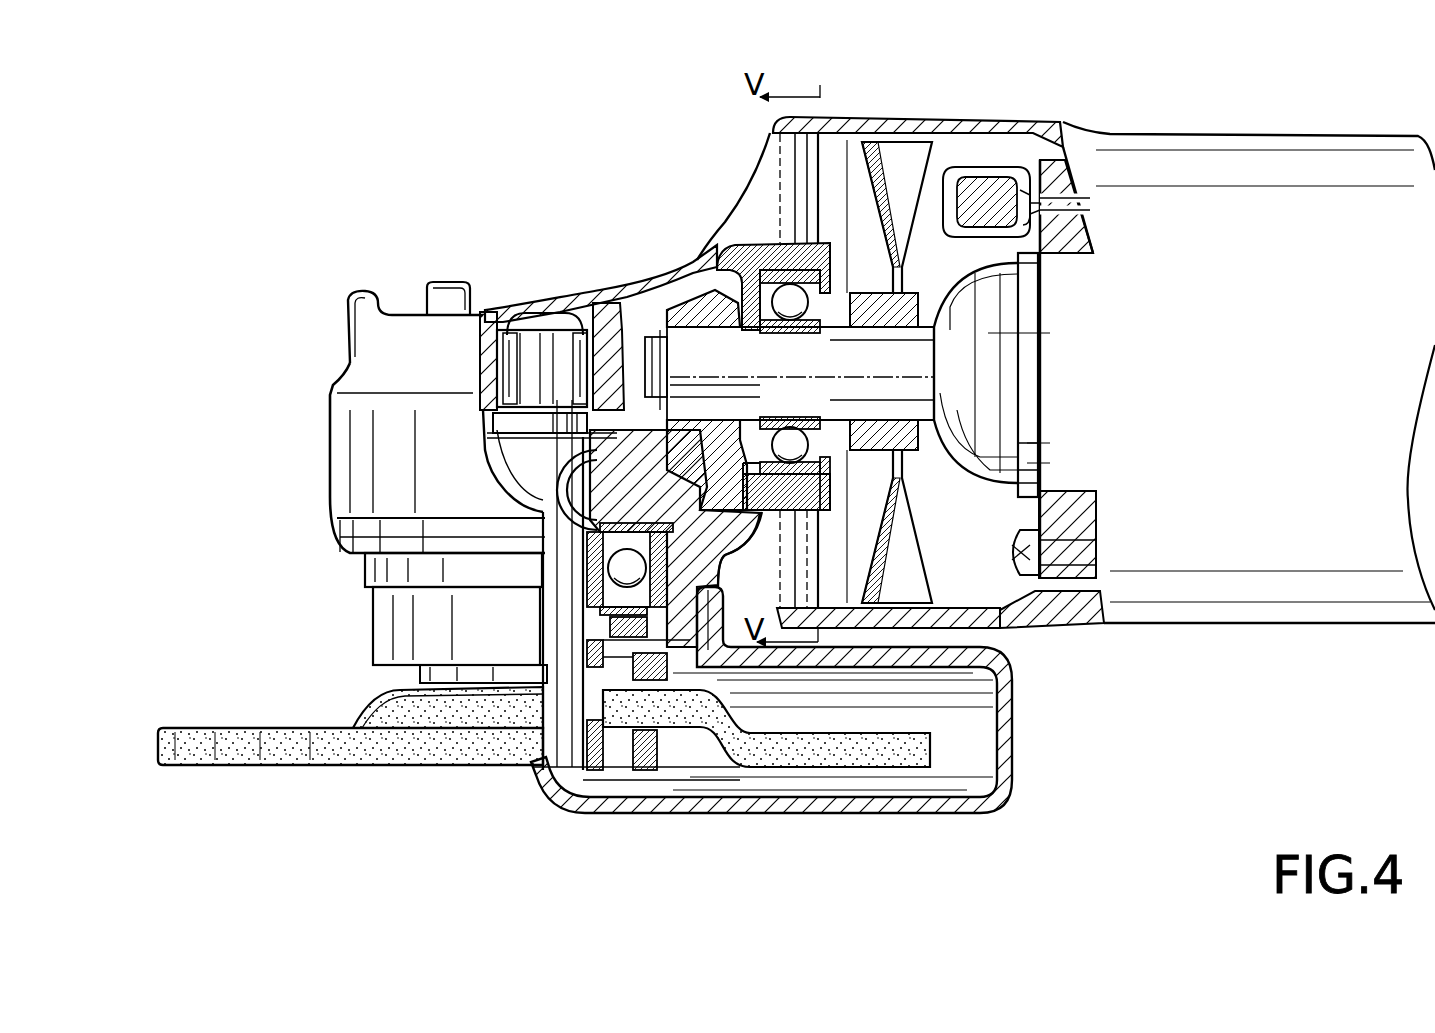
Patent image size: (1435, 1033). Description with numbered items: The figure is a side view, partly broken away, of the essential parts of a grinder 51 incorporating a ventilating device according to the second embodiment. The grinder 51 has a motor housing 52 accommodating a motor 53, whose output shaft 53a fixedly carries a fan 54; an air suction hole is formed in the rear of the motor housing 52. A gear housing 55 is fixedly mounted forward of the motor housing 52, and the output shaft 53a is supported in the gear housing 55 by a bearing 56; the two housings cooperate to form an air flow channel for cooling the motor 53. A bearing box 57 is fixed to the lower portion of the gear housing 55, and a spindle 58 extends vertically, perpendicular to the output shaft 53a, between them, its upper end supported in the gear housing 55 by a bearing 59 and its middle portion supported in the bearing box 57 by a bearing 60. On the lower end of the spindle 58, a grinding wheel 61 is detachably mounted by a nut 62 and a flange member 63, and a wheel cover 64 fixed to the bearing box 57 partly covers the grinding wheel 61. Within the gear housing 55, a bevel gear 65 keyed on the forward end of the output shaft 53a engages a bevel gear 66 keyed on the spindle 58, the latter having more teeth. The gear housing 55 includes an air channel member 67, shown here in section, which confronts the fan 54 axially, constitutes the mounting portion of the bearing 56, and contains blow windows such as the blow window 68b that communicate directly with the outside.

The grinder 51 is at (990, 104).
The motor housing 52 is at (1311, 190).
The motor 53 is at (988, 333).
The output shaft 53a is at (843, 335).
The fan 54 is at (903, 153).
The gear housing 55 is at (598, 305).
The bearing 56 is at (783, 300).
The bearing box 57 is at (387, 613).
The spindle 58 is at (540, 343).
The bearing 59 is at (507, 370).
The bearing 60 is at (670, 557).
The grinding wheel 61 is at (920, 752).
The nut 62 is at (658, 740).
The flange member 63 is at (590, 683).
The wheel cover 64 is at (1013, 713).
The bevel gear 65 is at (697, 308).
The bevel gear 66 is at (555, 472).
The air channel member 67 is at (822, 175).
The blow window 68b is at (765, 177).